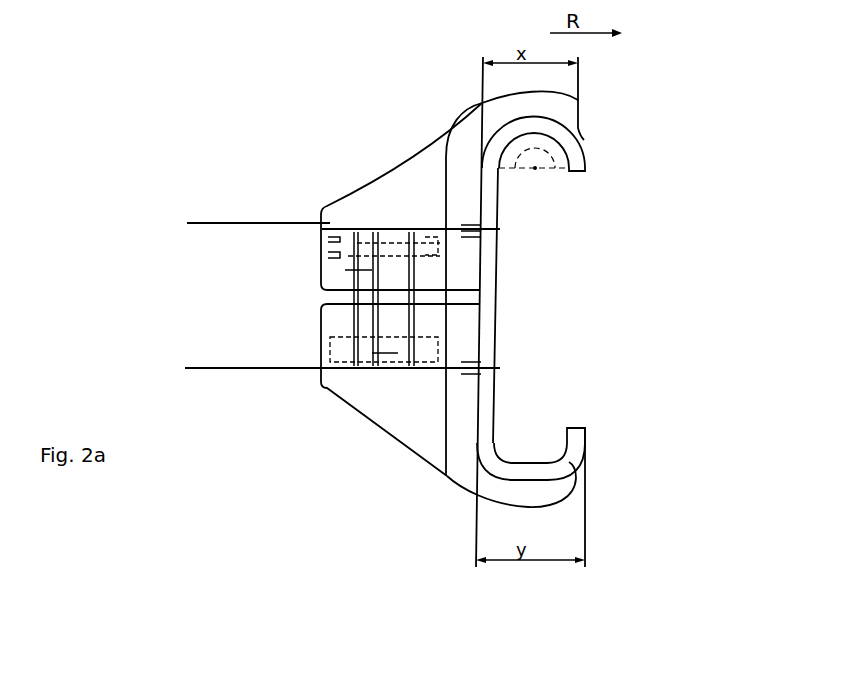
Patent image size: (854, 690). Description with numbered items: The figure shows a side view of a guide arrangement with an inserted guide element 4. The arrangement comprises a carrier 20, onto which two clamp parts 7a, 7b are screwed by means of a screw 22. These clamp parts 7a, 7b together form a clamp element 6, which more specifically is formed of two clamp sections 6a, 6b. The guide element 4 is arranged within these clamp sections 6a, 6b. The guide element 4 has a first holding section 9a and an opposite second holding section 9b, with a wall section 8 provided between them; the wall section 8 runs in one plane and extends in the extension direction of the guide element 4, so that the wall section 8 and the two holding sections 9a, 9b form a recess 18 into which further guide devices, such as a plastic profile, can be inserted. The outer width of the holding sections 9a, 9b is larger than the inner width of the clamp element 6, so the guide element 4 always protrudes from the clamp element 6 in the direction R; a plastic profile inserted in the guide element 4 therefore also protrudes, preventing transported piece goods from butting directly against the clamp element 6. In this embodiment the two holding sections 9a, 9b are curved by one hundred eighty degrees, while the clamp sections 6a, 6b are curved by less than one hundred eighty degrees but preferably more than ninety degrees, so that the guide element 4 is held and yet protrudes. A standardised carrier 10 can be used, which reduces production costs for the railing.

The guide element 4 is at (541, 253).
The clamp element 6 is at (460, 492).
The clamp section 6a is at (550, 105).
The clamp section 6b is at (542, 495).
The clamp part 7a is at (395, 198).
The clamp part 7b is at (400, 418).
The wall section 8 is at (500, 300).
The first holding section 9a is at (583, 132).
The second holding section 9b is at (580, 443).
The standardised carrier 10 is at (330, 432).
The recess 18 is at (540, 372).
The carrier 20 is at (240, 252).
The screw 22 is at (366, 270).